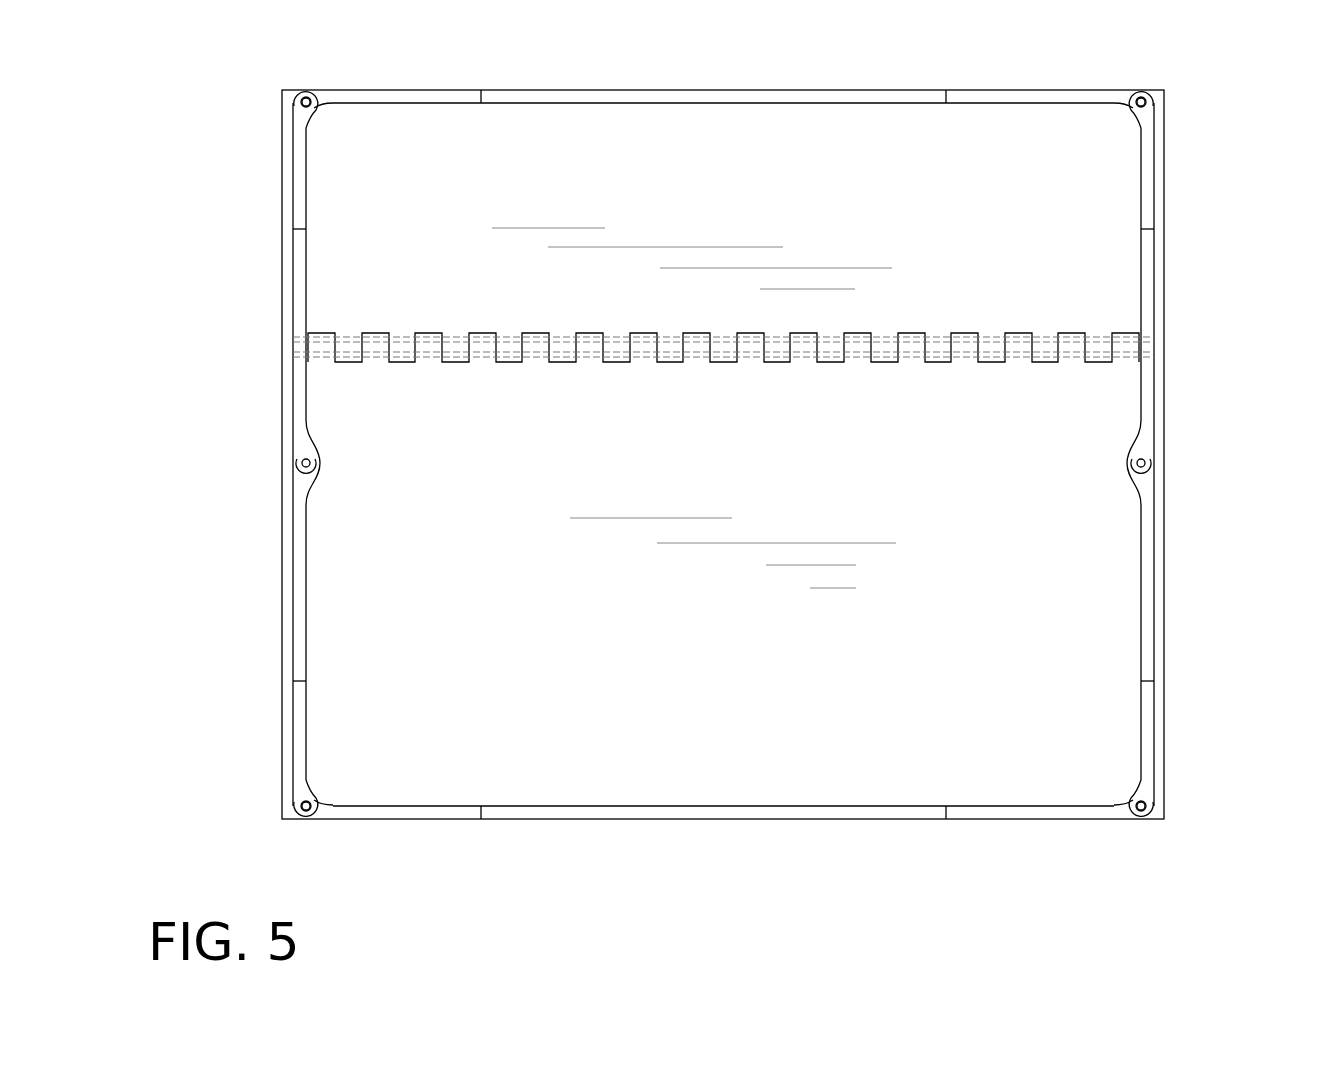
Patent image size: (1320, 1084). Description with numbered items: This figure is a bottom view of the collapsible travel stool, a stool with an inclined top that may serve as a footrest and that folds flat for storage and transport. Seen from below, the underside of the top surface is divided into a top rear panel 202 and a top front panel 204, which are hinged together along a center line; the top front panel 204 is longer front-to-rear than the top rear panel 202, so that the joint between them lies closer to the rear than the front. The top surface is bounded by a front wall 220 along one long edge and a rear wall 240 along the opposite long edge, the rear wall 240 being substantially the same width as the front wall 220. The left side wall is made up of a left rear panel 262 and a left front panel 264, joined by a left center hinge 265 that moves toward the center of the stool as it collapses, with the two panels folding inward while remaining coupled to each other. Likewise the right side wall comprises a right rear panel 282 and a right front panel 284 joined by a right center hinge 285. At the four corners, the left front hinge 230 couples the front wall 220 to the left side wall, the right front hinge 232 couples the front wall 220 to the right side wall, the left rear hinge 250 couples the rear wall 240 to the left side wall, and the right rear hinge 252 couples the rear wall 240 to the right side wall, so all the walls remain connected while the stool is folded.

The top rear panel 202 is at (418, 180).
The top front panel 204 is at (390, 672).
The front wall 220 is at (704, 812).
The left front hinge 230 is at (1142, 808).
The right front hinge 232 is at (307, 808).
The rear wall 240 is at (717, 100).
The left rear hinge 250 is at (1143, 101).
The right rear hinge 252 is at (303, 99).
The left rear panel 262 is at (1148, 410).
The left front panel 264 is at (1148, 553).
The left center hinge 265 is at (1144, 465).
The right rear panel 282 is at (300, 400).
The right front panel 284 is at (302, 590).
The right center hinge 285 is at (303, 465).